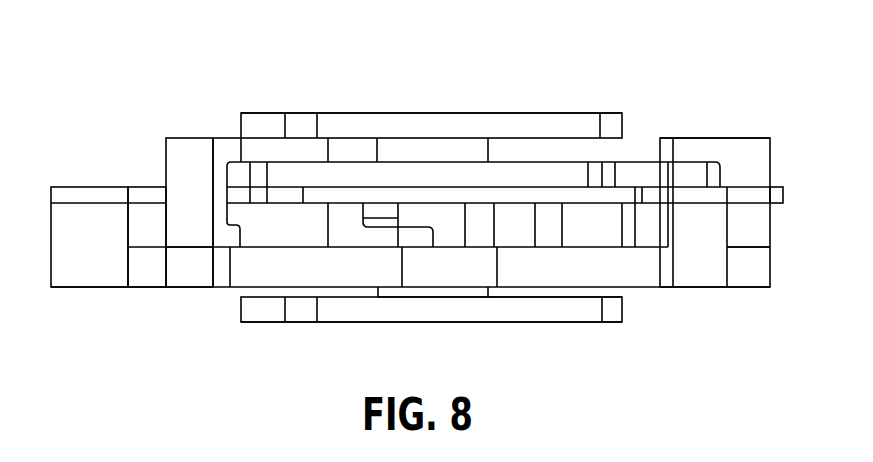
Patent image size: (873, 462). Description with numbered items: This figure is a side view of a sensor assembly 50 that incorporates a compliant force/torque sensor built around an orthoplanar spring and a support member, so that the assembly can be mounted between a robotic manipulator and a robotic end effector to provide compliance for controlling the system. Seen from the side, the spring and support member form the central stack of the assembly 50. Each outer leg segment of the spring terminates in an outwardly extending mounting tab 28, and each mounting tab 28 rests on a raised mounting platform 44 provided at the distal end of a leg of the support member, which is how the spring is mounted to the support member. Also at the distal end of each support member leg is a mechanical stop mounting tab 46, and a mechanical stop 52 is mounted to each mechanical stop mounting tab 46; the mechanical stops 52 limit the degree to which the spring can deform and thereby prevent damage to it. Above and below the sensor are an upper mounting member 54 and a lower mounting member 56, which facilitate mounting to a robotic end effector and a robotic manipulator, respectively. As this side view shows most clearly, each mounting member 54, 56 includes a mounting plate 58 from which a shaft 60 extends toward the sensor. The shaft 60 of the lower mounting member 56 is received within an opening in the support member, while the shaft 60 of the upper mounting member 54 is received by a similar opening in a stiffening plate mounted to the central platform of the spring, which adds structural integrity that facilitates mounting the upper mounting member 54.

The mounting tab 28 is at (88, 185).
The raised mounting platform 44 is at (65, 242).
The mechanical stop mounting tab 46 is at (192, 272).
The sensor assembly 50 is at (797, 82).
The mechanical stop 52 is at (195, 137).
The upper mounting member 54 is at (495, 87).
The lower mounting member 56 is at (355, 338).
The mounting plate 58 is at (388, 112).
The shaft 60 is at (438, 148).